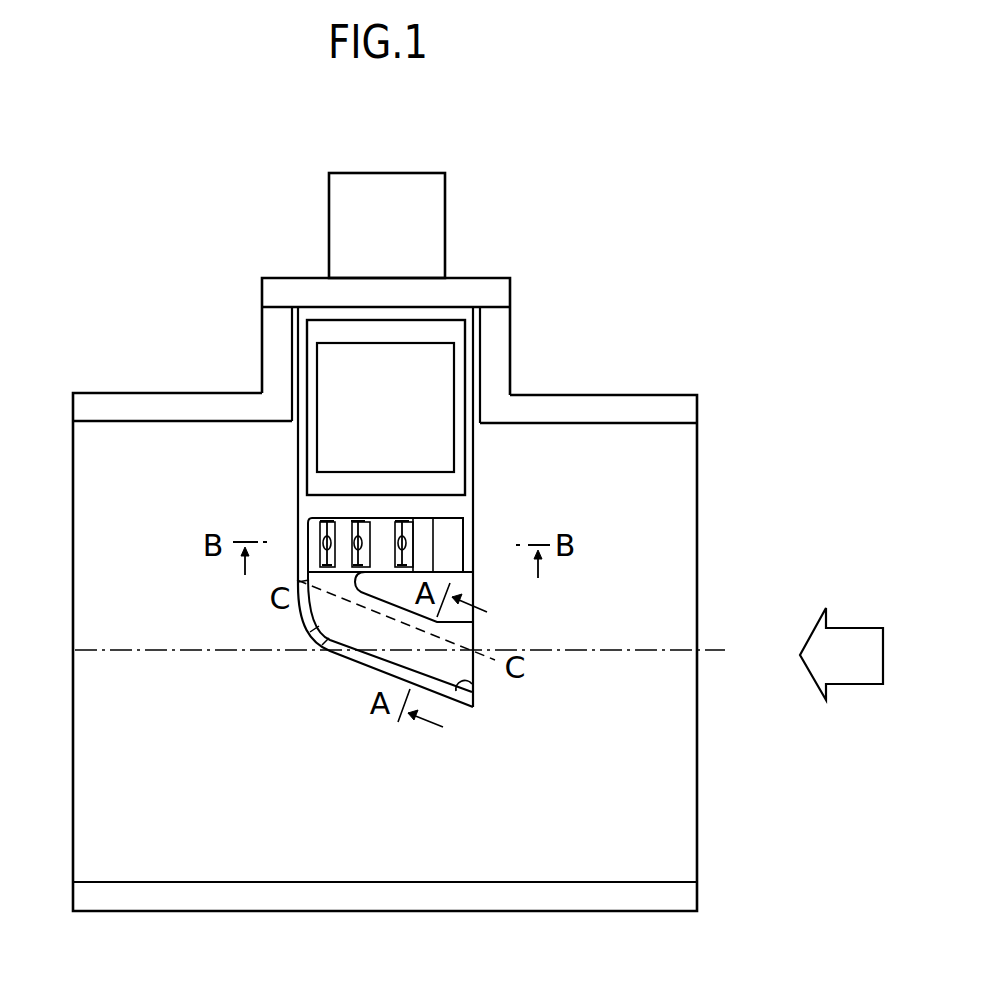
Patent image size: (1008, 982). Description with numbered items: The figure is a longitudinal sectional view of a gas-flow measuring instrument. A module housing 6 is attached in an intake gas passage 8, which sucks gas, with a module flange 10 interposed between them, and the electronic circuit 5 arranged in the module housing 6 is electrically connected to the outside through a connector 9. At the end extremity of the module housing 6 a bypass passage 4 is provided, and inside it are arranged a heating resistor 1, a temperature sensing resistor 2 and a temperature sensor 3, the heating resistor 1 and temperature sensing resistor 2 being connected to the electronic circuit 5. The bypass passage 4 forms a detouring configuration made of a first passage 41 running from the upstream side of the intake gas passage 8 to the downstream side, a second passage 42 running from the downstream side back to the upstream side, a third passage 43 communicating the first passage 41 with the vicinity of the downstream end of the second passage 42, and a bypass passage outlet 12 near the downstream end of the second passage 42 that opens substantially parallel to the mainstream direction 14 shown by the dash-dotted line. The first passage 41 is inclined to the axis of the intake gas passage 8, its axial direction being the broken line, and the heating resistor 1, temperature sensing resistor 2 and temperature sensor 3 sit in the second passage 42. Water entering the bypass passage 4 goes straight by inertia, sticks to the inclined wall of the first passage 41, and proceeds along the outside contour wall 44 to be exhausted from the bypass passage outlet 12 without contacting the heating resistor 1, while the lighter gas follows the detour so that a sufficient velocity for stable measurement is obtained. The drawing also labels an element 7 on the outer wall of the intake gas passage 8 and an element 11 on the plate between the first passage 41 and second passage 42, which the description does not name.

The heating resistor 1 is at (404, 520).
The temperature sensing resistor 2 is at (368, 520).
The temperature sensor 3 is at (299, 530).
The bypass passage 4 is at (380, 617).
The electronic circuit 5 is at (437, 358).
The module housing 6 is at (292, 462).
The main passage body 7 is at (97, 393).
The intake gas passage 8 is at (587, 868).
The connector 9 is at (445, 200).
The module flange 10 is at (282, 278).
The partition plate 11 is at (475, 640).
The bypass passage outlet 12 is at (473, 527).
The mainstream direction 14 is at (855, 648).
The first passage 41 is at (350, 633).
The second passage 42 is at (382, 522).
The third passage 43 is at (346, 518).
The outside contour wall 44 is at (472, 676).